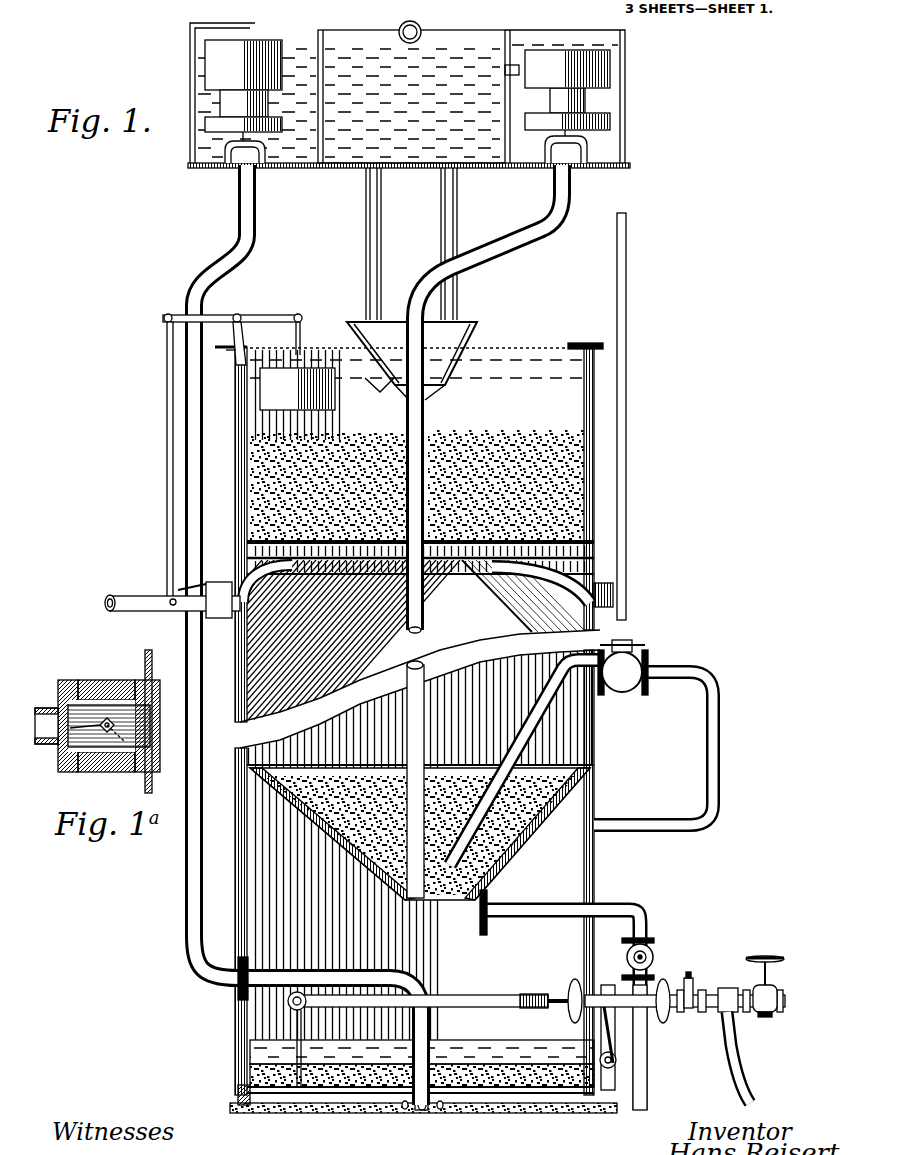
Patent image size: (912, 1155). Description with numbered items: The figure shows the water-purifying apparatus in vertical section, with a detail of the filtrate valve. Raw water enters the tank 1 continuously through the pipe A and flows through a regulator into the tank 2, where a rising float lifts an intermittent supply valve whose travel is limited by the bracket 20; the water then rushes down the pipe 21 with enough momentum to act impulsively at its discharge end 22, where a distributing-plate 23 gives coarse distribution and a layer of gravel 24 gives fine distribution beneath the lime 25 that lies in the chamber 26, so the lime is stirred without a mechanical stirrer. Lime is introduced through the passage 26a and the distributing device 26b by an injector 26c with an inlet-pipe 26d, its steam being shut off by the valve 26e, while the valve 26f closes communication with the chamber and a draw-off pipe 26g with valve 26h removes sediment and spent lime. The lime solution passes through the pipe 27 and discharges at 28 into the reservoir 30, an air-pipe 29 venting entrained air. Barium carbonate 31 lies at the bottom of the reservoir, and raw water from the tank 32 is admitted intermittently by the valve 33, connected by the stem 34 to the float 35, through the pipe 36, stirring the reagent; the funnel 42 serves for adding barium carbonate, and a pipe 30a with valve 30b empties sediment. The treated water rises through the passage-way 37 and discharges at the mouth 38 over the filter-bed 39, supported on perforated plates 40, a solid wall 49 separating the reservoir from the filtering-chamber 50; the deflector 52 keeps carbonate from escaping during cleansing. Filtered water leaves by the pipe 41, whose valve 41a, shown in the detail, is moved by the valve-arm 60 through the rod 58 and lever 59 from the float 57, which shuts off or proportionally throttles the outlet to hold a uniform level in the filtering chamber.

In FIG. 1, the tank 1 is at (375, 40).
In FIG. 1, the pipe A is at (422, 28).
In FIG. 1, the bracket 20 is at (192, 52).
In FIG. 1, the tank 2 is at (200, 66).
In FIG. 1, the pipe 21 is at (240, 188).
In FIG. 1, the barium carbonate / adjustable regulator 31 is at (512, 70).
In FIG. 1, the tank 32 is at (608, 97).
In FIG. 1, the float 35 is at (565, 108).
In FIG. 1, the stem 34 is at (613, 127).
In FIG. 1, the valve 33 is at (590, 147).
In FIG. 1, the pipe 36 is at (575, 195).
In FIG. 1, the lever 59 is at (212, 315).
In FIG. 1, the float 57 is at (298, 388).
In FIG. 1, the funnel 42 is at (462, 323).
In FIG. 1, the mouth 38 is at (542, 400).
In FIG. 1, the filtering-chamber 50 is at (590, 353).
In FIG. 1, the passage-way 37 is at (517, 438).
In FIG. 1, the filter-bed 39 is at (590, 465).
In FIG. 1, the air-pipe 29 is at (625, 502).
In FIG. 1, the perforated plates 40 is at (590, 535).
In FIG. 1, the solid wall 49 is at (540, 569).
In FIG. 1, the rod 58 is at (172, 473).
In FIG. 1, the valve-arm 60 is at (177, 590).
In FIG. 1, the pipe 41 is at (103, 605).
In FIG. 1, the deflector 52 is at (320, 618).
In FIG. 1, the reservoir 30 is at (277, 793).
In FIG. 1, the pipe 27 is at (620, 832).
In FIG. 1, the discharge 28 is at (478, 880).
In FIG. 1, the pipe 30a is at (627, 910).
In FIG. 1, the valve 30b is at (641, 950).
In FIG. 1, the chamber 26 is at (272, 1008).
In FIG. 1, the passage 26a is at (625, 1000).
In FIG. 1, the distributing device 26b is at (460, 999).
In FIG. 1, the injector 26c is at (763, 1010).
In FIG. 1, the inlet-pipe 26d is at (752, 1097).
In FIG. 1, the valve 26e is at (764, 962).
In FIG. 1, the valve 26f is at (690, 985).
In FIG. 1, the draw-off pipe 26g is at (630, 1078).
In FIG. 1, the valve 26h is at (610, 1075).
In FIG. 1, the lime 25 is at (287, 1040).
In FIG. 1, the discharge end 22 is at (422, 1112).
In FIG. 1, the distributing-plate 23 is at (488, 1092).
In FIG. 1, the layer of gravel 24 is at (565, 1102).
In FIG. 1A, the valve 41a is at (58, 748).